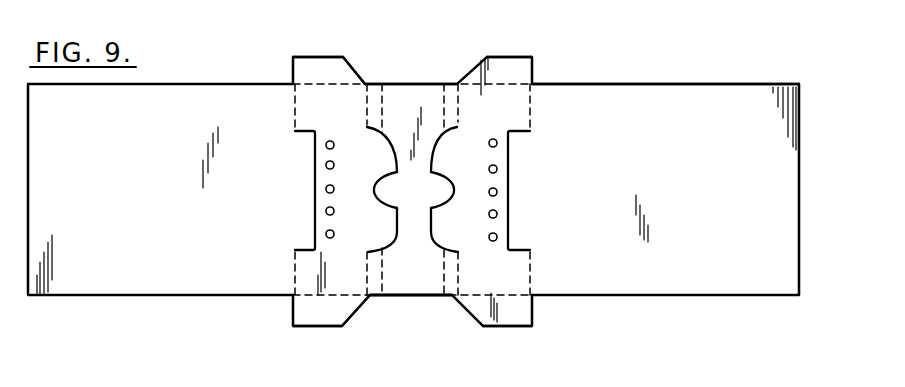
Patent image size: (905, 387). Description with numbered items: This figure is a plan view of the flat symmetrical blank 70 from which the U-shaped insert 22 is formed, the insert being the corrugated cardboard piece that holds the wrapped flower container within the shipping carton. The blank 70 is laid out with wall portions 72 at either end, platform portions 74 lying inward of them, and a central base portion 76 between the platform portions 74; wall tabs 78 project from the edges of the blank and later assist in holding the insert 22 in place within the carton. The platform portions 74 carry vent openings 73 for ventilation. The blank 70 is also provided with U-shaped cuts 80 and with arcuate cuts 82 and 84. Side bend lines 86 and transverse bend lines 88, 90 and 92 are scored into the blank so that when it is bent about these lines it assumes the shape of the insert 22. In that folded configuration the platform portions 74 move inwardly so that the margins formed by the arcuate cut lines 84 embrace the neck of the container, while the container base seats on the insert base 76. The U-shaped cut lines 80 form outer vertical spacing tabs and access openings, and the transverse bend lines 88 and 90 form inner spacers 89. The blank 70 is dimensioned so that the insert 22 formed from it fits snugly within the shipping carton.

The U-shaped insert 22 is at (673, 82).
The symmetrical blank 70 is at (582, 83).
The wall portions 72 is at (183, 97).
The vent openings 73 is at (326, 147).
The platform portions 74 is at (345, 217).
The central base portion 76 is at (413, 290).
The wall tabs 78 is at (312, 64).
The U-shaped cuts 80 is at (313, 140).
The arcuate cuts 82 is at (384, 131).
The arcuate cuts 84 is at (447, 188).
The side bend lines 86 is at (349, 72).
The transverse bend lines 88 is at (443, 97).
The inner spacers 89 is at (459, 82).
The transverse bend lines 90 is at (367, 108).
The transverse bend lines 92 is at (293, 110).